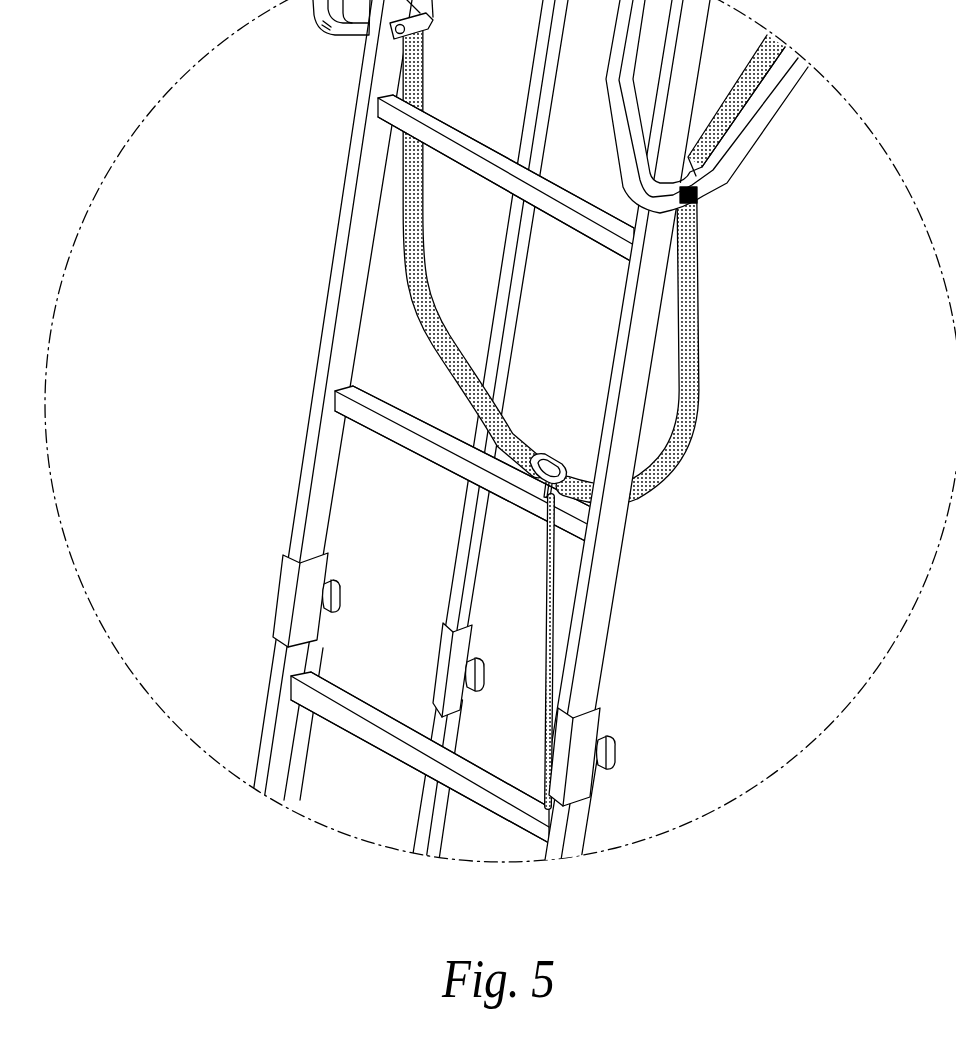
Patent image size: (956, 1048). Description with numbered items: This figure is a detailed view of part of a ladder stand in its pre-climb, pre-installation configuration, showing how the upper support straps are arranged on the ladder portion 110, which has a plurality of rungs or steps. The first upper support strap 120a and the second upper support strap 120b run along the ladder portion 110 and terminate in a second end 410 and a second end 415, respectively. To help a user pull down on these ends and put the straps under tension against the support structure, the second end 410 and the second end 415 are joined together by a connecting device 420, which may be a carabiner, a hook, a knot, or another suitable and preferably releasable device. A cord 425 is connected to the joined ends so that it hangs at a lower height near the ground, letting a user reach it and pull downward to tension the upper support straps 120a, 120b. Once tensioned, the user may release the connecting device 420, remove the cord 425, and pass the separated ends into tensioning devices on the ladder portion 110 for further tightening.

The ladder portion 110 is at (325, 312).
The first upper support strap 120a is at (422, 256).
The second upper support strap 120b is at (688, 448).
The second end of the first upper support strap 410 is at (447, 342).
The second end of the second upper support strap 415 is at (680, 400).
The connecting device 420 is at (552, 456).
The cord 425 is at (545, 645).